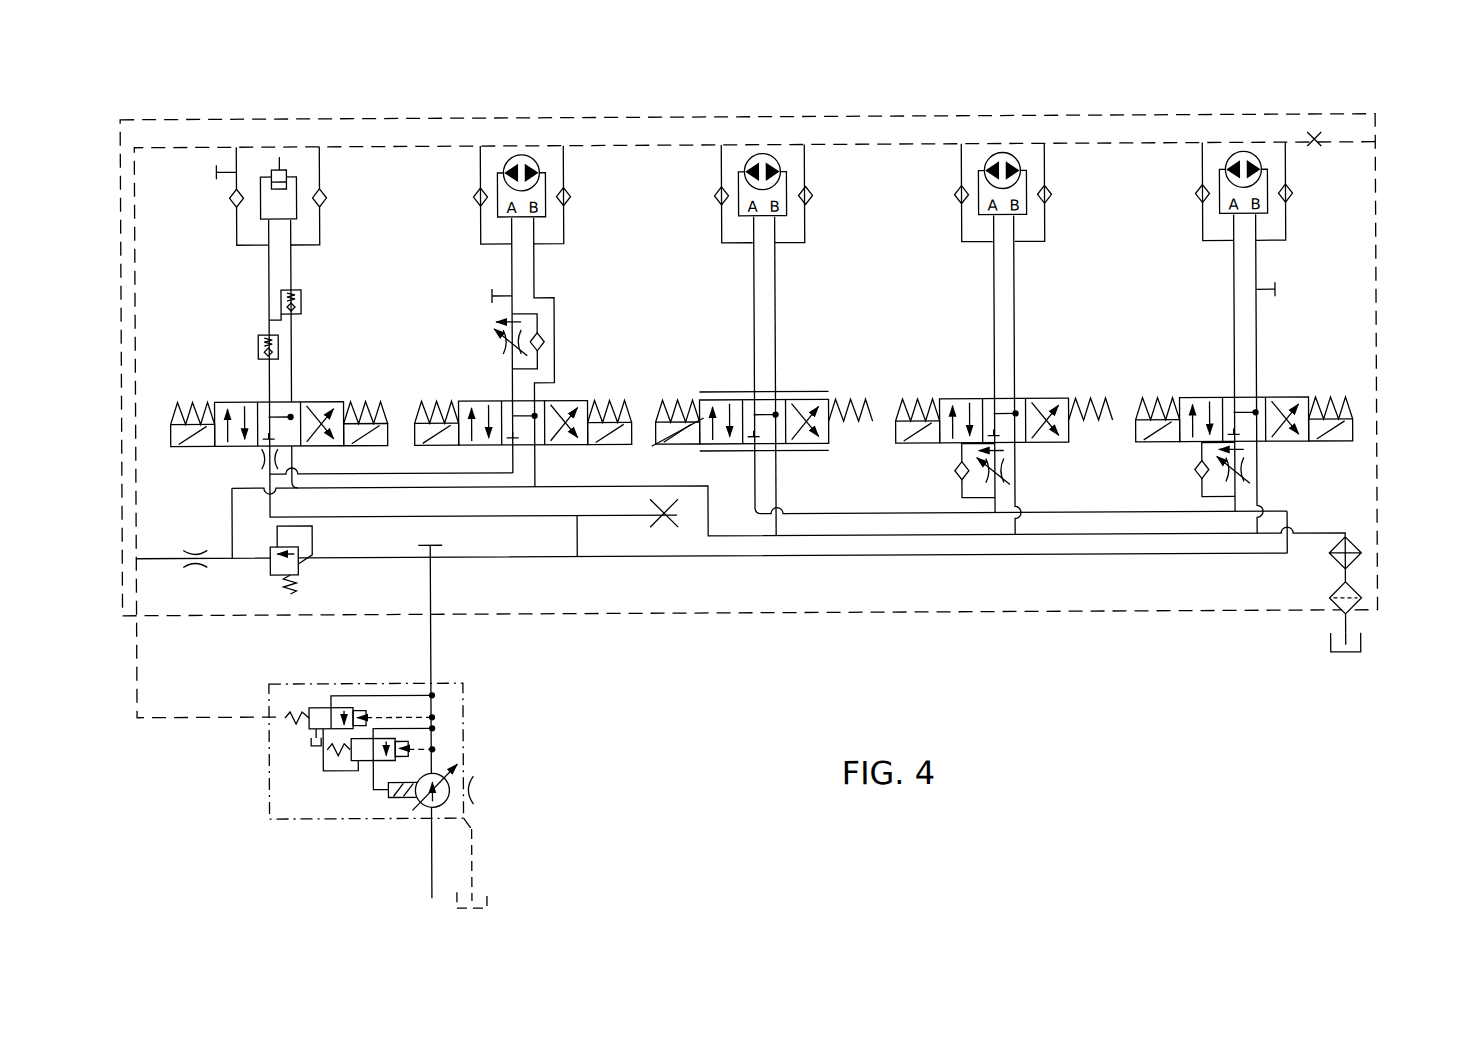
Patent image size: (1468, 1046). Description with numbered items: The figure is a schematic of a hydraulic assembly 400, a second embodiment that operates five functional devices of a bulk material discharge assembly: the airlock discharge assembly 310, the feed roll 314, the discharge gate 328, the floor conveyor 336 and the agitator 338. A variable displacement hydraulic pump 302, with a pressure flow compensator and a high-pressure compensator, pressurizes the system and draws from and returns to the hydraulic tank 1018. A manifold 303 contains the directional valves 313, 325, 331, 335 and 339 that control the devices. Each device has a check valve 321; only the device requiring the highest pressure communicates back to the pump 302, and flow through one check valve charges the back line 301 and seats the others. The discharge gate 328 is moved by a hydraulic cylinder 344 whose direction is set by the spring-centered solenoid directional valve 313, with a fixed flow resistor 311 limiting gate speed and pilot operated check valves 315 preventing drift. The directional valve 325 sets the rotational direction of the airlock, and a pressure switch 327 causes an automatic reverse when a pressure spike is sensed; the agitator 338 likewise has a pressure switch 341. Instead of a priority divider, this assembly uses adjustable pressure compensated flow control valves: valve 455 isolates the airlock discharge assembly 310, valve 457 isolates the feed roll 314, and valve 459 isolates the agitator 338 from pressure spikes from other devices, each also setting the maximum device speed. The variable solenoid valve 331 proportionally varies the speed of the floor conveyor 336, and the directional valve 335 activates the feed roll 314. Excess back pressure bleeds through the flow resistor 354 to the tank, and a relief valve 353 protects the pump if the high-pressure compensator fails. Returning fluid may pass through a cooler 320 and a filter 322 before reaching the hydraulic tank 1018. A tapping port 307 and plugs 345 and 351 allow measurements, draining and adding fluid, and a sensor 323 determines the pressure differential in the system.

The back line 301 is at (653, 143).
The variable displacement hydraulic pump 302 is at (488, 762).
The manifold 303 is at (1020, 622).
The tapping port 307 is at (442, 543).
The airlock discharge assembly 310 is at (540, 160).
The fixed flow resistor 311 is at (256, 462).
The directional valve 313 is at (337, 398).
The feed roll 314 is at (1020, 160).
The pilot operated check valves 315 is at (250, 342).
The cooler 320 is at (1365, 535).
The check valve 321 is at (335, 192).
The filter 322 is at (1367, 582).
The sensor 323 is at (222, 190).
The directional valve 325 is at (580, 396).
The pressure switch 327 is at (486, 272).
The discharge gate 328 is at (271, 163).
The variable solenoid valve 331 is at (826, 395).
The directional valve 335 is at (1060, 395).
The floor conveyor 336 is at (780, 160).
The agitator 338 is at (1262, 160).
The directional valve 339 is at (1300, 395).
The pressure switch 341 is at (1257, 286).
The hydraulic cylinder 344 is at (273, 172).
The plug 345 is at (1333, 136).
The plug 351 is at (682, 518).
The relief valve 353 is at (279, 585).
The flow resistor 354 is at (195, 585).
The hydraulic assembly 400 is at (1150, 755).
The adjustable pressure compensated flow control valve 455 is at (500, 330).
The adjustable pressure compensated flow control valve 457 is at (945, 476).
The adjustable pressure compensated flow control valve 459 is at (1185, 476).
The hydraulic tank 1018 is at (1326, 660).